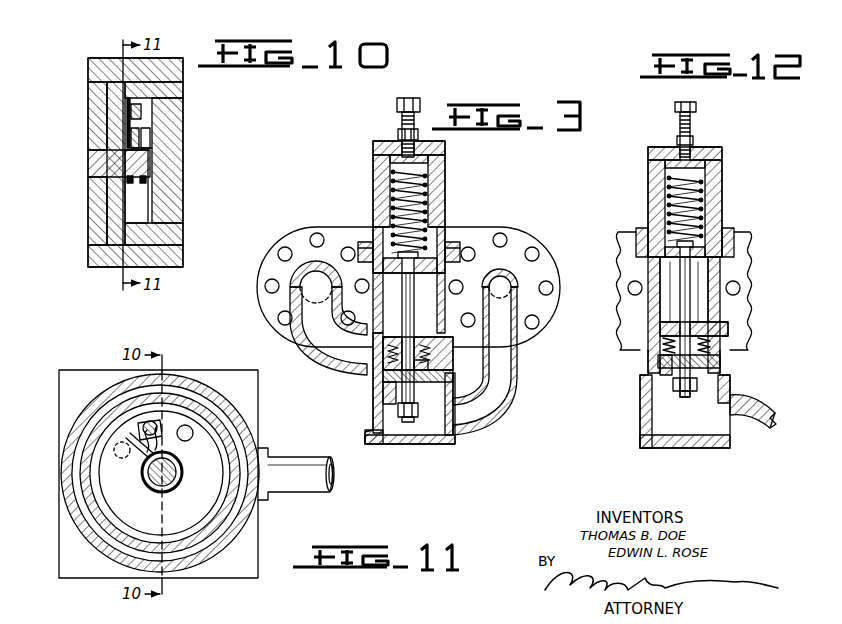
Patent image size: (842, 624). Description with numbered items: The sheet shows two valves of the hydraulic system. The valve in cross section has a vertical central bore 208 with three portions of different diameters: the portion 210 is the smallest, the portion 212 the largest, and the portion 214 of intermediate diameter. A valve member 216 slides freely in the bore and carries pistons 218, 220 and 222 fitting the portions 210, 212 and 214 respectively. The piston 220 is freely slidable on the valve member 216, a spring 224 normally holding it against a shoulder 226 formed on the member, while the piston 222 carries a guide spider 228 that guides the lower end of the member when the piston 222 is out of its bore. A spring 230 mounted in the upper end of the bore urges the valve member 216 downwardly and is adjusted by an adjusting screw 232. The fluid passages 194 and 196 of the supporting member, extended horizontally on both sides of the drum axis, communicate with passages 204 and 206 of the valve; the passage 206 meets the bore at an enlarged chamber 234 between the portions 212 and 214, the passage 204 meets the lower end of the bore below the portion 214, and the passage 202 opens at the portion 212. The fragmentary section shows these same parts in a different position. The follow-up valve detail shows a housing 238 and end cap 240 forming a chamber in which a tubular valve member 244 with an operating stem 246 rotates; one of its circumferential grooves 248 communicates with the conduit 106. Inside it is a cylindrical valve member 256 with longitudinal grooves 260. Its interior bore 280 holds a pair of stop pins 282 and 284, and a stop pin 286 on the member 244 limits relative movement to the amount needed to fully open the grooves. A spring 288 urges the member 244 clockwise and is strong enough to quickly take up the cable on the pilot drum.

In FIG. 11, the conduit 106 is at (303, 487).
In FIG. 3, the fluid passage 194 is at (505, 285).
In FIG. 3, the fluid passage 196 is at (316, 287).
In FIG. 3, the passage 202 is at (421, 291).
In FIG. 12, the passage 202 is at (698, 283).
In FIG. 3, the passage 204 is at (502, 366).
In FIG. 12, the passage 204 is at (757, 425).
In FIG. 3, the passage 206 is at (333, 343).
In FIG. 12, the passage 206 is at (642, 362).
In FIG. 3, the vertical central bore 208 is at (432, 180).
In FIG. 12, the vertical central bore 208 is at (710, 176).
In FIG. 3, the bore portion 210 is at (376, 231).
In FIG. 3, the bore portion 212 is at (375, 290).
In FIG. 3, the bore portion 214 is at (383, 395).
In FIG. 3, the valve member 216 is at (413, 312).
In FIG. 12, the valve member 216 is at (696, 302).
In FIG. 3, the piston 218 is at (442, 231).
In FIG. 12, the piston 218 is at (712, 226).
In FIG. 3, the piston 220 is at (442, 347).
In FIG. 12, the piston 220 is at (722, 324).
In FIG. 3, the piston 222 is at (447, 380).
In FIG. 12, the piston 222 is at (712, 363).
In FIG. 3, the spring 224 is at (445, 363).
In FIG. 3, the shoulder 226 is at (385, 340).
In FIG. 12, the shoulder 226 is at (672, 332).
In FIG. 3, the guide spider 228 is at (450, 410).
In FIG. 12, the guide spider 228 is at (720, 384).
In FIG. 3, the spring 230 is at (390, 170).
In FIG. 12, the spring 230 is at (666, 200).
In FIG. 3, the adjusting screw 232 is at (401, 125).
In FIG. 12, the adjusting screw 232 is at (692, 122).
In FIG. 3, the enlarged chamber 234 is at (437, 370).
In FIG. 12, the enlarged chamber 234 is at (712, 345).
In FIG. 10, the housing 238 is at (172, 60).
In FIG. 11, the housing 238 is at (178, 372).
In FIG. 10, the end cap 240 is at (97, 218).
In FIG. 10, the tubular valve member 244 is at (107, 93).
In FIG. 11, the tubular valve member 244 is at (92, 434).
In FIG. 10, the operating stem 246 is at (90, 165).
In FIG. 10, the circumferential groove 248 is at (170, 268).
In FIG. 10, the cylindrical valve member 256 is at (170, 150).
In FIG. 11, the cylindrical valve member 256 is at (180, 537).
In FIG. 10, the longitudinal grooves 260 is at (176, 92).
In FIG. 10, the interior bore 280 is at (152, 205).
In FIG. 11, the stop pin 282 is at (190, 440).
In FIG. 10, the stop pin 284 is at (140, 138).
In FIG. 11, the stop pin 284 is at (125, 458).
In FIG. 10, the stop pin 286 is at (142, 112).
In FIG. 11, the stop pin 286 is at (160, 418).
In FIG. 10, the spring 288 is at (148, 182).
In FIG. 11, the spring 288 is at (131, 436).